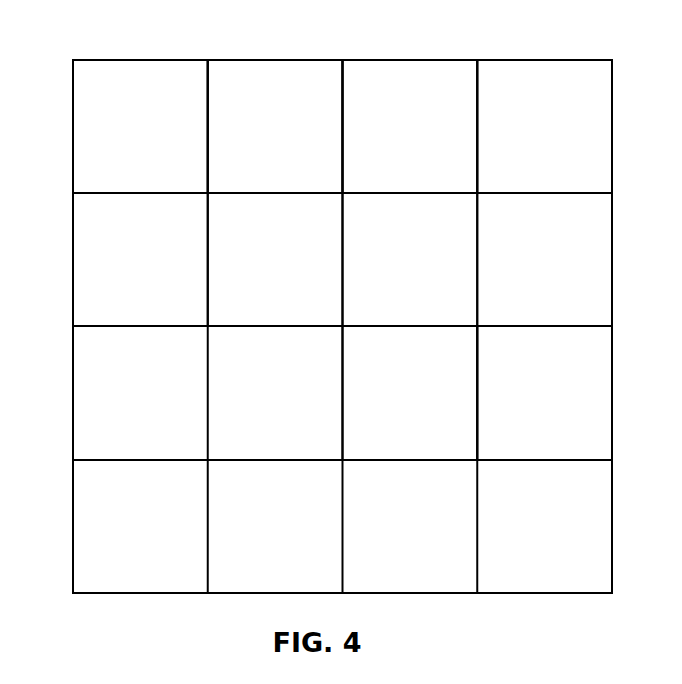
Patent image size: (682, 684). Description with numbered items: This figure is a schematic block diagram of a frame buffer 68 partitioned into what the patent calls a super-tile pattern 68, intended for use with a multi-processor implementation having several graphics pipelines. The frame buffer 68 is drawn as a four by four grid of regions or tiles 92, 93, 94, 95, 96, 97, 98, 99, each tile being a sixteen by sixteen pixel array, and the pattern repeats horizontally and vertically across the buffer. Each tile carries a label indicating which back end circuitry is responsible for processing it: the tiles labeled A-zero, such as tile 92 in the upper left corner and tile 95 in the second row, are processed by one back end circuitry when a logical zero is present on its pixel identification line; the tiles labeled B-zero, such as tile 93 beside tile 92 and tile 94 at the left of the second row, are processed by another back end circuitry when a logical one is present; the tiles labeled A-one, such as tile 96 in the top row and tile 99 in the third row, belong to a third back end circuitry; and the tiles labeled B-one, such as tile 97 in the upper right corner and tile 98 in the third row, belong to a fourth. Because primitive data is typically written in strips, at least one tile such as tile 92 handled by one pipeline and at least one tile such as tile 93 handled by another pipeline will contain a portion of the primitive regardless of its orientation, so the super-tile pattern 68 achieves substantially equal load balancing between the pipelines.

The frame buffer 68 is at (612, 250).
The tile 92 is at (139, 60).
The tile 93 is at (274, 60).
The tile 94 is at (73, 251).
The tile 95 is at (342, 224).
The tile 96 is at (408, 60).
The tile 97 is at (543, 60).
The tile 98 is at (408, 326).
The tile 99 is at (543, 326).